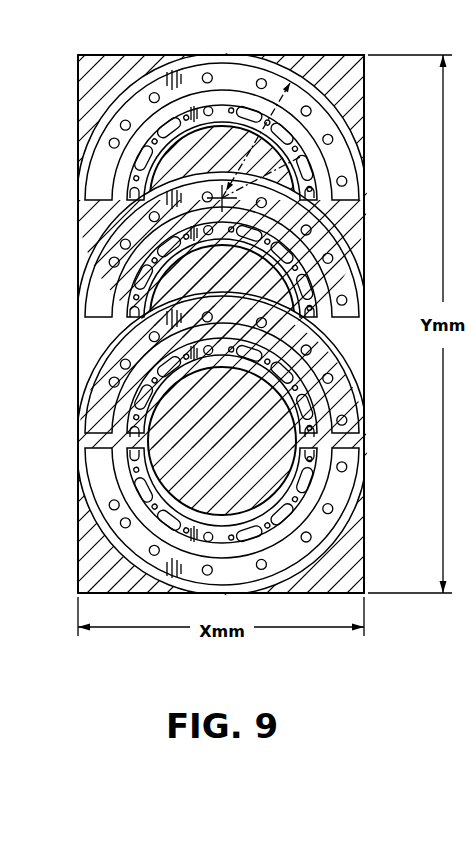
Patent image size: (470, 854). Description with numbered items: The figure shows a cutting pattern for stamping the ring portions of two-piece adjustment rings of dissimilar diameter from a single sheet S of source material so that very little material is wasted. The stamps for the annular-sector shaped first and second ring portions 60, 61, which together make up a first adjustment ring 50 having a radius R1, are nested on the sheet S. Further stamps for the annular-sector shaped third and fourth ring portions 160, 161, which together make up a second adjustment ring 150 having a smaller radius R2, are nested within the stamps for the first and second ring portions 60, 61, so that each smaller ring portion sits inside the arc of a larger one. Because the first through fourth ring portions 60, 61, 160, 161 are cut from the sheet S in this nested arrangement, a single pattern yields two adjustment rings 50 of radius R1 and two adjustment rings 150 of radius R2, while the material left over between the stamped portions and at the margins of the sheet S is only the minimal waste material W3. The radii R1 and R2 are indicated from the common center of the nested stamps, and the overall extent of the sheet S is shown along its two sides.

The sheet of source material S is at (352, 221).
The waste material W3 is at (117, 82).
The first adjustment ring 50 is at (336, 390).
The second adjustment ring 150 is at (315, 418).
The first ring portion 60 is at (114, 245).
The third ring portion 160 is at (128, 296).
The second ring portion 61 is at (116, 128).
The fourth ring portion 161 is at (130, 185).
The radius of first adjustment ring R1 is at (264, 56).
The radius of second adjustment ring R2 is at (300, 157).